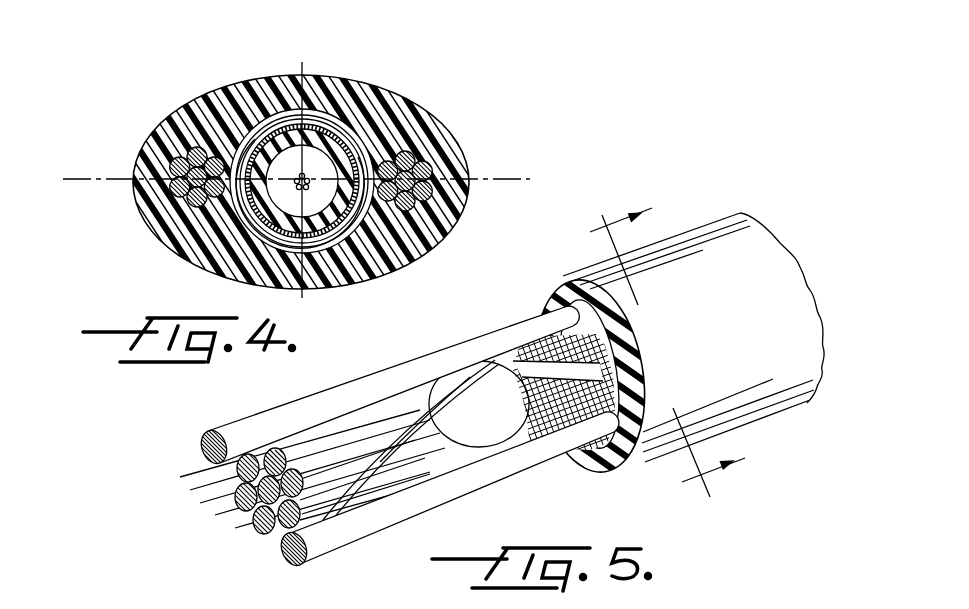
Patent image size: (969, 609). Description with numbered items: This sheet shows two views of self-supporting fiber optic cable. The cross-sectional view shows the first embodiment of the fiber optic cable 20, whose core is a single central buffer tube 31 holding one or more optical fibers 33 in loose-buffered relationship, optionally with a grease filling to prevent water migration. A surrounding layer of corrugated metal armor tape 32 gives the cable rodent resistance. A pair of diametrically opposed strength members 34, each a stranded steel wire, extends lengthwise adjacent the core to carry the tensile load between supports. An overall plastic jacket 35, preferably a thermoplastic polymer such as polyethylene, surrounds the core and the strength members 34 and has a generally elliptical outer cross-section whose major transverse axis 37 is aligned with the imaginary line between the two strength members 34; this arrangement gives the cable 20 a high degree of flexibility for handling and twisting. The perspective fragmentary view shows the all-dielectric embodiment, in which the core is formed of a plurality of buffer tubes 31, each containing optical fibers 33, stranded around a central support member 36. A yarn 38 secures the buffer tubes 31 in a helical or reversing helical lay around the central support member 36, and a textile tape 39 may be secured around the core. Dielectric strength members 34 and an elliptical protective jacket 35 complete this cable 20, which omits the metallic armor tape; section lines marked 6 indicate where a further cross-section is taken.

In FIG. 4, the fiber optic cable 20 is at (181, 90).
In FIG. 5, the fiber optic cable 20 is at (487, 325).
In FIG. 4, the central buffer tube 31 is at (345, 149).
In FIG. 5, the central buffer tube 31 is at (277, 455).
In FIG. 4, the corrugated metal armor tape 32 is at (335, 119).
In FIG. 4, the optical fibers 33 is at (298, 187).
In FIG. 5, the optical fibers 33 is at (243, 488).
In FIG. 4, the strength members 34 is at (425, 156).
In FIG. 4, the plastic jacket 35 is at (307, 77).
In FIG. 5, the plastic jacket 35 is at (550, 300).
In FIG. 5, the central support member 36 is at (247, 512).
In FIG. 4, the major transverse axis 37 is at (74, 178).
In FIG. 5, the yarn 38 is at (450, 440).
In FIG. 5, the textile tape 39 is at (550, 427).
In FIG. 5, the section line 6 is at (649, 358).